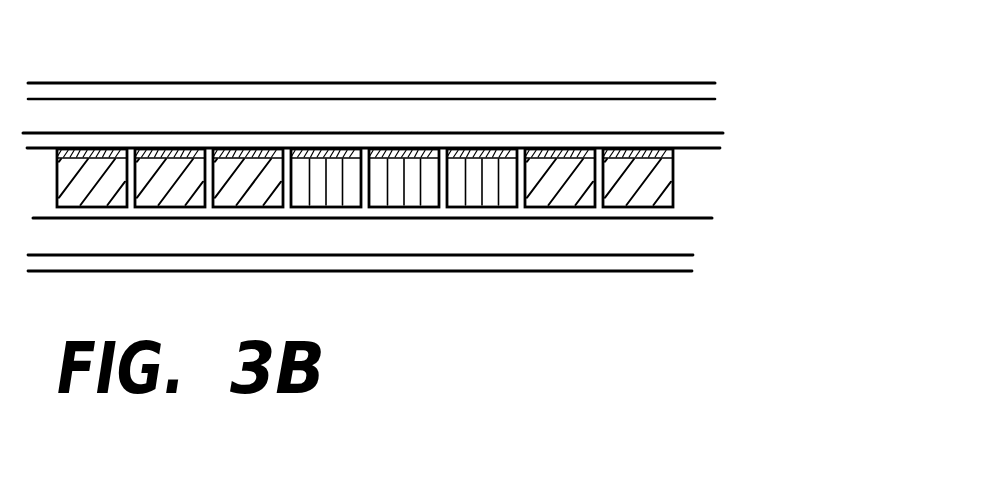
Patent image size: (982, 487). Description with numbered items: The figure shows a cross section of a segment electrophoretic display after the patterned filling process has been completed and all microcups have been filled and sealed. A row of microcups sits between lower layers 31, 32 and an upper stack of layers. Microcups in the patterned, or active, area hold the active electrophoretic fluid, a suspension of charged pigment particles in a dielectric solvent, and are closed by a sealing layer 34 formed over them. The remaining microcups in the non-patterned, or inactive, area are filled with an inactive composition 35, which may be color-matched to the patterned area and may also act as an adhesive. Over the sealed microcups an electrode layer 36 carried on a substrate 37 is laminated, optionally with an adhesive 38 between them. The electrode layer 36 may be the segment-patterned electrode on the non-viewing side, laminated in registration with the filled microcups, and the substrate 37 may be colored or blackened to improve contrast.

The substrate layer 31 is at (682, 234).
The bottom layer 32 is at (673, 263).
The sealing layer 34 is at (452, 257).
The inactive composition 35 is at (332, 187).
The electrode layer 36 is at (702, 118).
The substrate 37 is at (702, 90).
The adhesive 38 is at (707, 138).